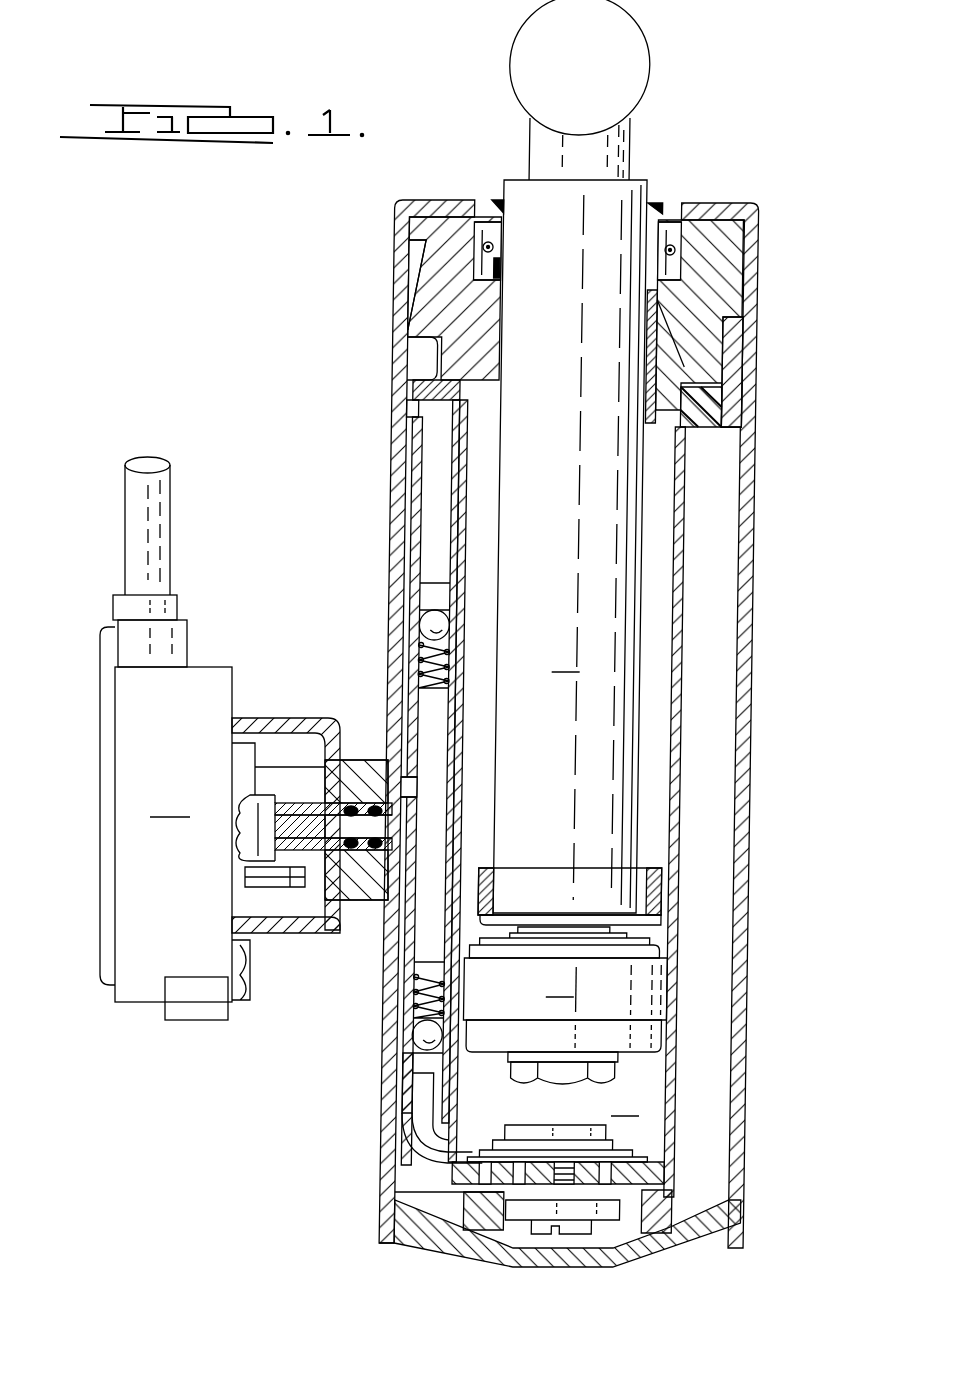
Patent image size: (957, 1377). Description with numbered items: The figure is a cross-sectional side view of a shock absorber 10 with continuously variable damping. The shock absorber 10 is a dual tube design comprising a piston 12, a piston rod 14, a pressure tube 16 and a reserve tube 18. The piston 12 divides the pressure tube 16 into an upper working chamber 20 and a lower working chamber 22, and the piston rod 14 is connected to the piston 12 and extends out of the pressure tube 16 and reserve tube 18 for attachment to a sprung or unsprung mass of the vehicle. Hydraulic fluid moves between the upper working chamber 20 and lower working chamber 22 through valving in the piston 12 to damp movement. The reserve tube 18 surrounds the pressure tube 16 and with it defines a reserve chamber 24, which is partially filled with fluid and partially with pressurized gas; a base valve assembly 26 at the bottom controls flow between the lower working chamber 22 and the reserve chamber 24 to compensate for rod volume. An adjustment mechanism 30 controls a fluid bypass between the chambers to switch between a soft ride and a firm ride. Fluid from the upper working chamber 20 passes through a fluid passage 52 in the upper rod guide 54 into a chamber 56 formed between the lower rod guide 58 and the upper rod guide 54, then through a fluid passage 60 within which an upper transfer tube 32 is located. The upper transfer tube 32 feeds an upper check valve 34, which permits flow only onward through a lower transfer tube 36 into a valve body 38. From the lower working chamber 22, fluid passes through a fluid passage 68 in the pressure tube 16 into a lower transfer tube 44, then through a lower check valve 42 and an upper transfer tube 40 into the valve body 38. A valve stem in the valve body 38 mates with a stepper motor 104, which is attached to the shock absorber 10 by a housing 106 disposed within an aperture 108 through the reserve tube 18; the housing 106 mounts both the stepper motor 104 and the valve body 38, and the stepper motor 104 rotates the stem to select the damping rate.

The shock absorber 10 is at (704, 126).
The piston 12 is at (564, 1005).
The piston rod 14 is at (576, 462).
The pressure tube 16 is at (681, 515).
The reserve tube 18 is at (749, 620).
The upper working chamber 20 is at (657, 452).
The lower working chamber 22 is at (529, 1161).
The reserve chamber 24 is at (706, 708).
The base valve assembly 26 is at (621, 1213).
The adjustment mechanism 30 is at (230, 615).
The upper transfer tube 32 is at (417, 442).
The upper check valve 34 is at (430, 625).
The lower transfer tube 36 is at (413, 690).
The valve body 38 is at (358, 877).
The upper transfer tube 40 is at (415, 962).
The lower check valve 42 is at (431, 1040).
The lower transfer tube 44 is at (412, 1125).
The fluid passage 52 is at (474, 397).
The upper rod guide 54 is at (676, 372).
The chamber 56 is at (437, 358).
The lower rod guide 58 is at (723, 405).
The fluid passage 60 is at (411, 411).
The fluid passage 68 is at (462, 1155).
The stepper motor 104 is at (166, 738).
The housing 106 is at (238, 930).
The aperture 108 is at (358, 762).